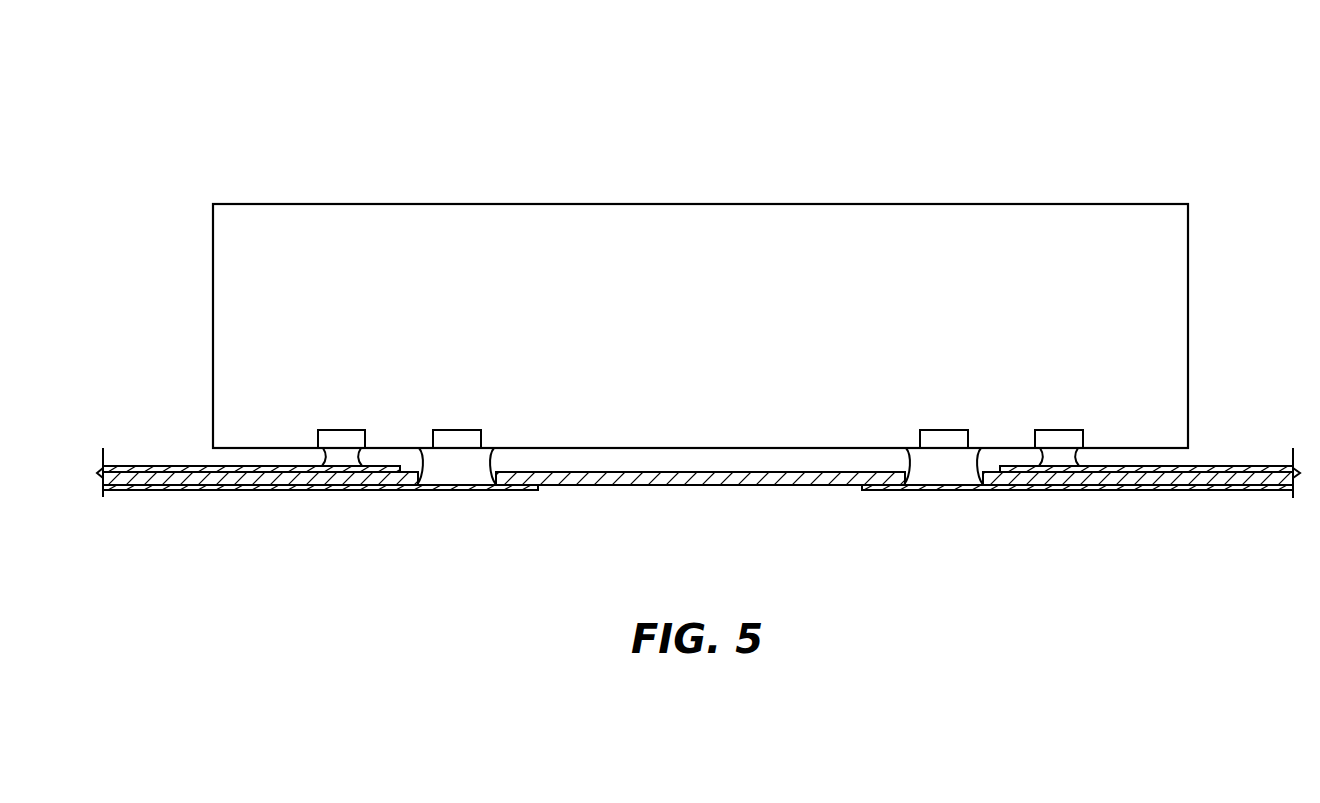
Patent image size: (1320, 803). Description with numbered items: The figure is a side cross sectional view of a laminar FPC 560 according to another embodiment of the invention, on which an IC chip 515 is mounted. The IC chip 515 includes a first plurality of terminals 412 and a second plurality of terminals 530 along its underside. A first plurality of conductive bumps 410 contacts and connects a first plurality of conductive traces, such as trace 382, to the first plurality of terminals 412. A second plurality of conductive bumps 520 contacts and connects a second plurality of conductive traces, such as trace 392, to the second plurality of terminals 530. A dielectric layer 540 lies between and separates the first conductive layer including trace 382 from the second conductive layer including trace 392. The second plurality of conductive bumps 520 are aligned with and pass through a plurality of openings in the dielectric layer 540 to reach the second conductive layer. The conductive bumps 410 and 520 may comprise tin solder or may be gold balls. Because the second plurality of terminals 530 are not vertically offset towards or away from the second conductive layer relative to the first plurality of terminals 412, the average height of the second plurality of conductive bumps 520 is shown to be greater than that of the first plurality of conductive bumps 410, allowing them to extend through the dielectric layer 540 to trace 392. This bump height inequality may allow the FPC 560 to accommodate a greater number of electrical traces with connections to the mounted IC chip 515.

The laminar FPC 560 is at (766, 112).
The IC chip 515 is at (332, 204).
The first plurality of terminals 412 is at (342, 437).
The first plurality of conductive bumps 410 is at (331, 458).
The second plurality of terminals 530 is at (458, 430).
The second plurality of conductive bumps 520 is at (458, 466).
The trace 382 is at (178, 466).
The dielectric layer 540 is at (741, 486).
The trace 392 is at (200, 490).